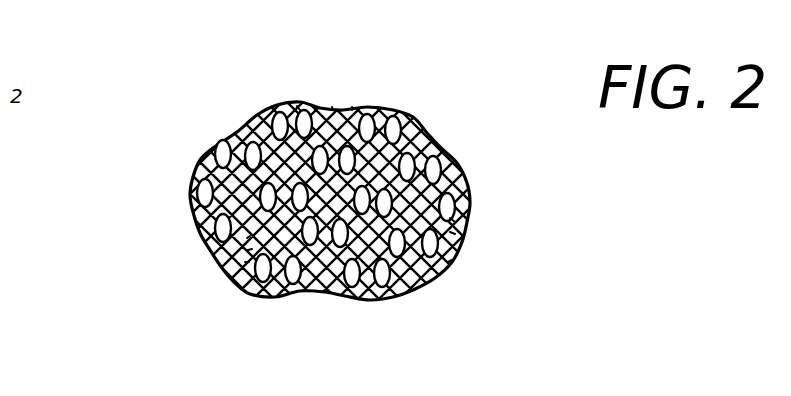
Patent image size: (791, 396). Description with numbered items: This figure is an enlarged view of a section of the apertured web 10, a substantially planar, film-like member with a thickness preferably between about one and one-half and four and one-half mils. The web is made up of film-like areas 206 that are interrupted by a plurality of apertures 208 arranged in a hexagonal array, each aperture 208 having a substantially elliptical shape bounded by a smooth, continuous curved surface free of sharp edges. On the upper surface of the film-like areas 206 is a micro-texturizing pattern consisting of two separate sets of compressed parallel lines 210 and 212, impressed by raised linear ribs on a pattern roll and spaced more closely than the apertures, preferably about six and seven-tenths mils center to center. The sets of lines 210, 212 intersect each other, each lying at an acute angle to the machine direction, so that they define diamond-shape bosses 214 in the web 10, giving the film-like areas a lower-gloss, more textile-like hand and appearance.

The web 10 is at (421, 111).
The film-like areas 206 is at (380, 300).
The apertures 208 is at (282, 110).
The compressed parallel lines 210 is at (448, 262).
The compressed parallel lines 212 is at (245, 262).
The diamond-shape bosses 214 is at (352, 107).